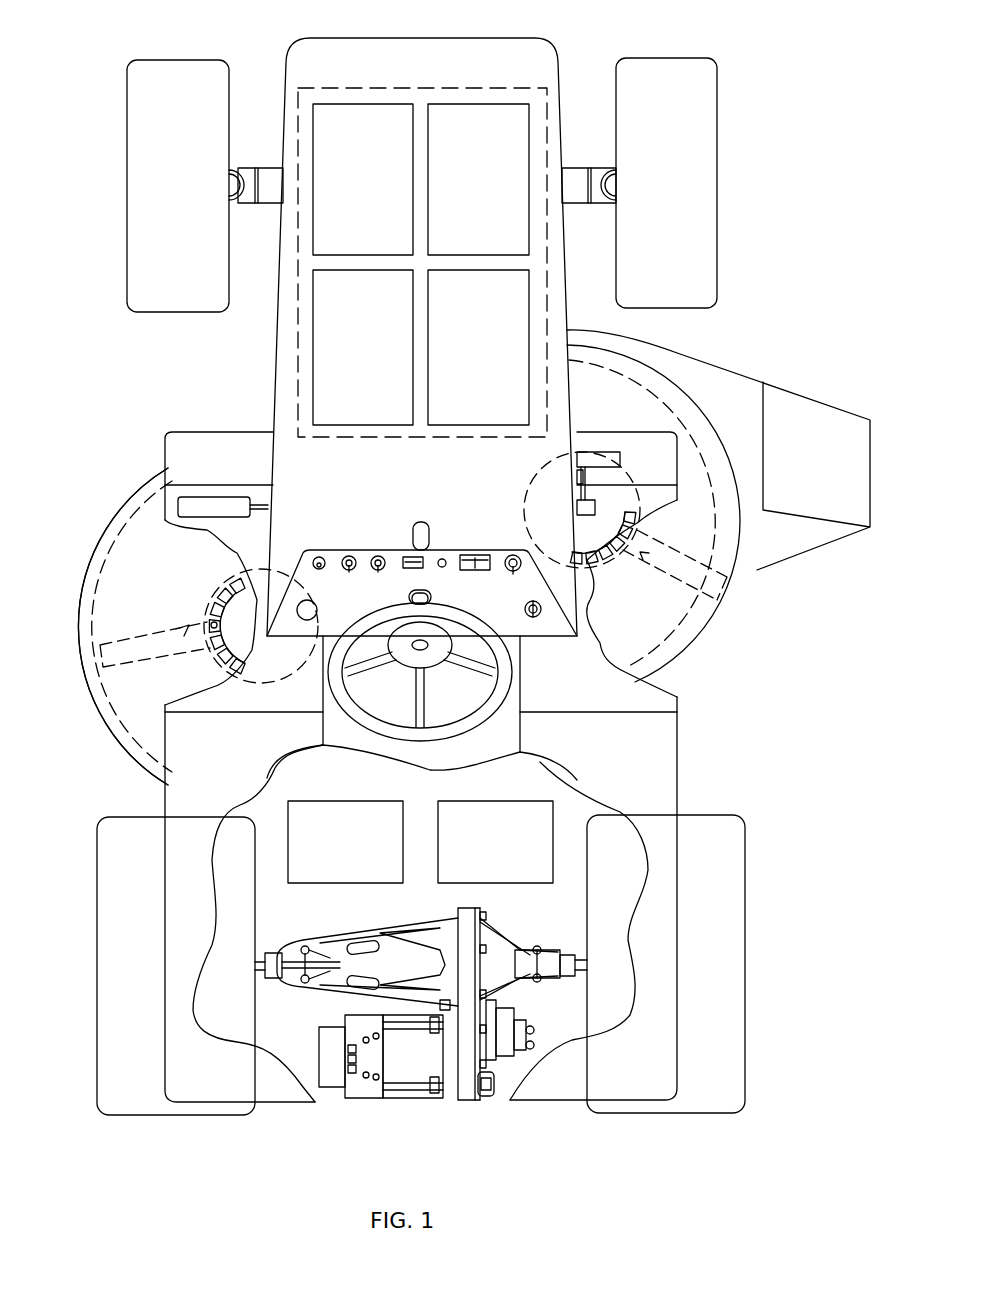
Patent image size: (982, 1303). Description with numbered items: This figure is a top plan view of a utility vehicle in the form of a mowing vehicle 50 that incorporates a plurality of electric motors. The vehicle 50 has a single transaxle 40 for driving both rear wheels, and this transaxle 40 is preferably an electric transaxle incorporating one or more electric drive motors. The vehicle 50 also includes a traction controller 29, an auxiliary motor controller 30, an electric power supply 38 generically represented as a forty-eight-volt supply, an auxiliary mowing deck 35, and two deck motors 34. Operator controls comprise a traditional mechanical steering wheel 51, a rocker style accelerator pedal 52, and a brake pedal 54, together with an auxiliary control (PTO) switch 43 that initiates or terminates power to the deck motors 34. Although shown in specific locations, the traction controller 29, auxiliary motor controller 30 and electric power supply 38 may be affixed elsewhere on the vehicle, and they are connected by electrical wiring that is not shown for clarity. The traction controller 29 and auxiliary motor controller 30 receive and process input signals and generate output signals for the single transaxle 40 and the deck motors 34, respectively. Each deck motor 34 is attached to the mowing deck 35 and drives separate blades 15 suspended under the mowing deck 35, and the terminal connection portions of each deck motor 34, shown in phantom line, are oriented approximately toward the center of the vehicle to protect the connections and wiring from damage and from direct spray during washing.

The mowing vehicle 50 is at (82, 224).
The electric power supply 38 is at (420, 86).
The brake pedal 54 is at (214, 505).
The auxiliary mowing deck 35 is at (137, 498).
The rocker style accelerator pedal 52 is at (617, 455).
The deck motor 34 is at (213, 592).
The blade 15 is at (127, 634).
The auxiliary control (PTO) switch 43 is at (515, 562).
The steering wheel 51 is at (487, 718).
The traction controller 29 is at (358, 855).
The auxiliary motor controller 30 is at (508, 855).
The transaxle 40 is at (528, 1125).